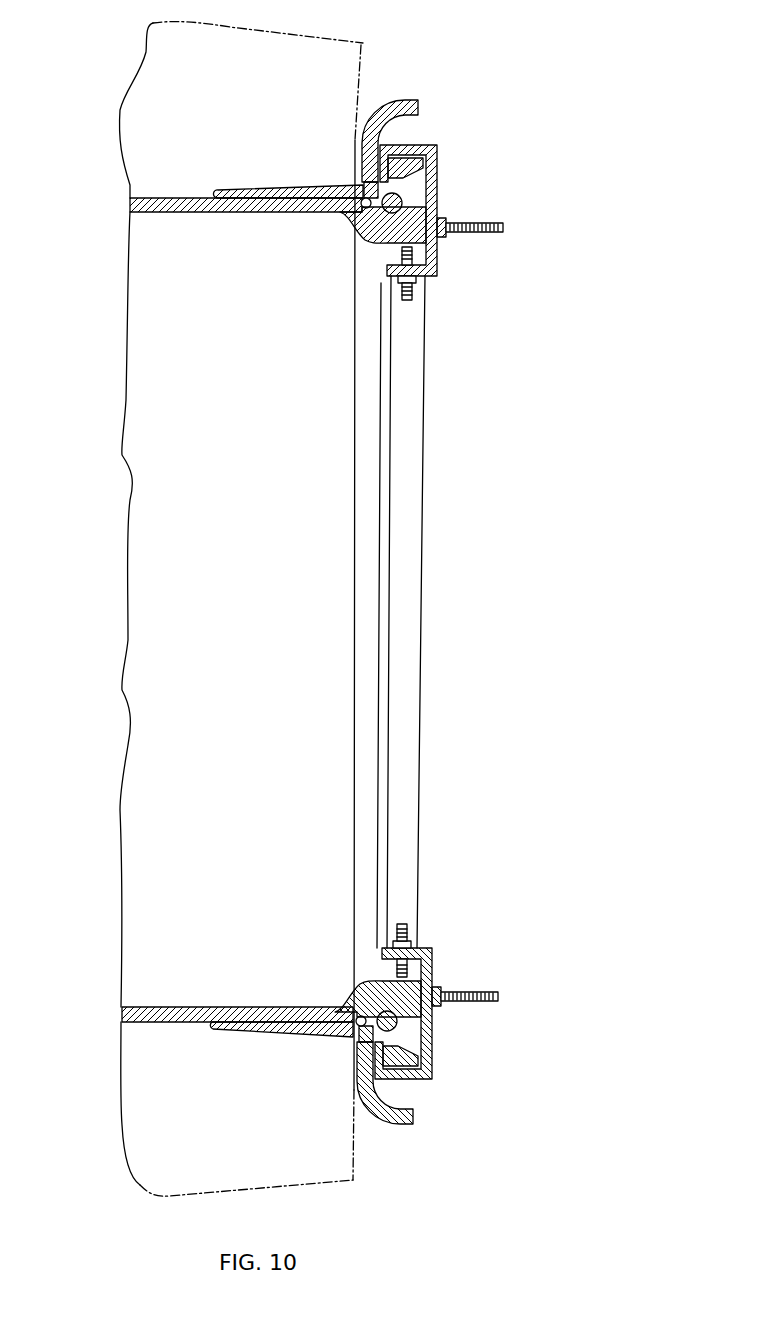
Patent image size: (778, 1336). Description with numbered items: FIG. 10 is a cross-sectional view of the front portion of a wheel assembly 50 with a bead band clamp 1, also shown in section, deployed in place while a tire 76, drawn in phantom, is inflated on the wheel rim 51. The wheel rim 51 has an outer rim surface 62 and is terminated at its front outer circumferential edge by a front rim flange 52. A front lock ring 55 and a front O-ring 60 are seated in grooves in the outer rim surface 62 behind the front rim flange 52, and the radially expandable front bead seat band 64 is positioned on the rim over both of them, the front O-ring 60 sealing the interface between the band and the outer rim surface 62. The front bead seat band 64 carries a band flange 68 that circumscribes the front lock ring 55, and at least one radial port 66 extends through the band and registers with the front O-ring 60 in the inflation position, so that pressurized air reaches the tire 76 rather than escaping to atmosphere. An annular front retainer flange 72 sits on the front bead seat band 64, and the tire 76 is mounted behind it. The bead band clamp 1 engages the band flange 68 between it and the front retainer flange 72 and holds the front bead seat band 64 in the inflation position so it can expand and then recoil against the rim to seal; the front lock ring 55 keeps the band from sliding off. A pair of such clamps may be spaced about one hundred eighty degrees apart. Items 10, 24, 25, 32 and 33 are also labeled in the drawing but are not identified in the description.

The bead band clamp 1 is at (446, 581).
The frame member 10 is at (416, 170).
The glass panel 24 is at (412, 316).
The fastener 25 is at (424, 298).
The bolt 32 is at (520, 636).
The threaded shank 33 is at (496, 250).
The wheel assembly 50 is at (364, 598).
The wheel rim 51 is at (242, 565).
The front rim flange 52 is at (354, 612).
The front lock ring 55 is at (438, 180).
The front O-ring 60 is at (350, 217).
The outer rim surface 62 is at (210, 196).
The front bead seat band 64 is at (263, 176).
The radial port 66 is at (355, 186).
The band flange 68 is at (427, 145).
The front retainer flange 72 is at (418, 105).
The tire 76 is at (367, 43).